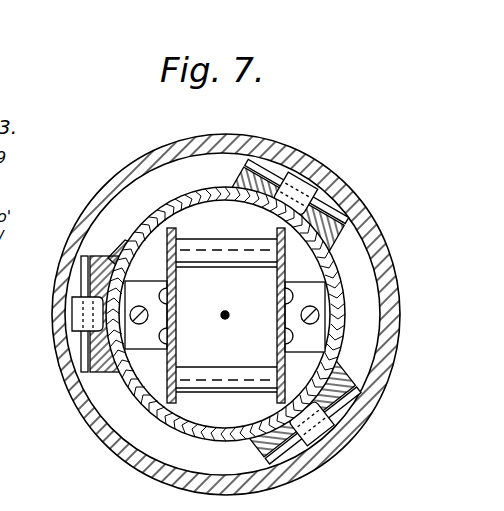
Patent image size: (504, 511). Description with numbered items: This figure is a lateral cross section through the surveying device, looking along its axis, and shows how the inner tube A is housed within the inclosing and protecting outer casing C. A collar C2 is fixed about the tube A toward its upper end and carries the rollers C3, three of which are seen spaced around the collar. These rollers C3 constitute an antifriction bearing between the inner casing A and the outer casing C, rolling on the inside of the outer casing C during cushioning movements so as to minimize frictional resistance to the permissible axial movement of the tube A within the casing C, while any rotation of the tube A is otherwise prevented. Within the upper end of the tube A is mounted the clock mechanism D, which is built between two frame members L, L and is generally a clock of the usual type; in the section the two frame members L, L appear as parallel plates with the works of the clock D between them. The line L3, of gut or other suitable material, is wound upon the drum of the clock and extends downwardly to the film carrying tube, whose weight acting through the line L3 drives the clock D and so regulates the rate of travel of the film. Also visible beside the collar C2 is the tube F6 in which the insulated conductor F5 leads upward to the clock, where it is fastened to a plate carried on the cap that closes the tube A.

The tube A is at (344, 256).
The outer casing C is at (346, 205).
The collar C2 is at (138, 400).
The rollers C3 is at (297, 182).
The clock mechanism D is at (260, 354).
The insulated conductor F5 is at (138, 252).
The tube F6 is at (148, 250).
The frame members L is at (272, 277).
The line L3 is at (221, 322).